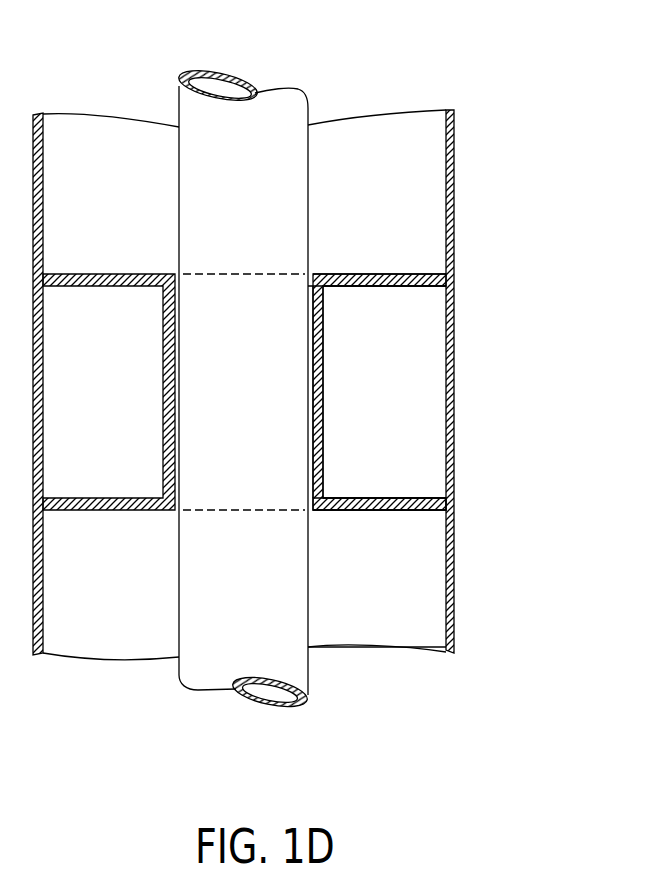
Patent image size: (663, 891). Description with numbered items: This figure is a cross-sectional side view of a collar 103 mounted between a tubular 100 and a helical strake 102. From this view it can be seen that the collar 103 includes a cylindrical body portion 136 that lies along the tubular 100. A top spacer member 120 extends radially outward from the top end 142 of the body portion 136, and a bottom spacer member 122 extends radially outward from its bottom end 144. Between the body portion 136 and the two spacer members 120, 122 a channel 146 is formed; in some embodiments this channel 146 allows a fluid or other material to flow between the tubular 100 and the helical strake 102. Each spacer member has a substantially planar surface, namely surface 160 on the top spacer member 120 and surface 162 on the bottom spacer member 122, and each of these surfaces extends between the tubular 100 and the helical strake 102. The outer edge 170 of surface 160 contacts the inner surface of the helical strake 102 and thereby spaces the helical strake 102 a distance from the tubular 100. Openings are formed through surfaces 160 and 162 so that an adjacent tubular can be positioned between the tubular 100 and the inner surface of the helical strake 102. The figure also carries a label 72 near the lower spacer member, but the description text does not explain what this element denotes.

The tubular 100 is at (307, 668).
The helical strake 102 is at (454, 648).
The collar 103 is at (395, 232).
The top spacer member 120 is at (414, 268).
The bottom spacer member 122 is at (416, 529).
The cylindrical body portion 136 is at (323, 375).
The top end 142 is at (323, 290).
The bottom end 144 is at (323, 487).
The channel 146 is at (405, 418).
The substantially planar surface 160 is at (364, 272).
The substantially planar surface 162 is at (367, 510).
The outer edge 170 is at (454, 279).
The lower plate 72 is at (454, 502).